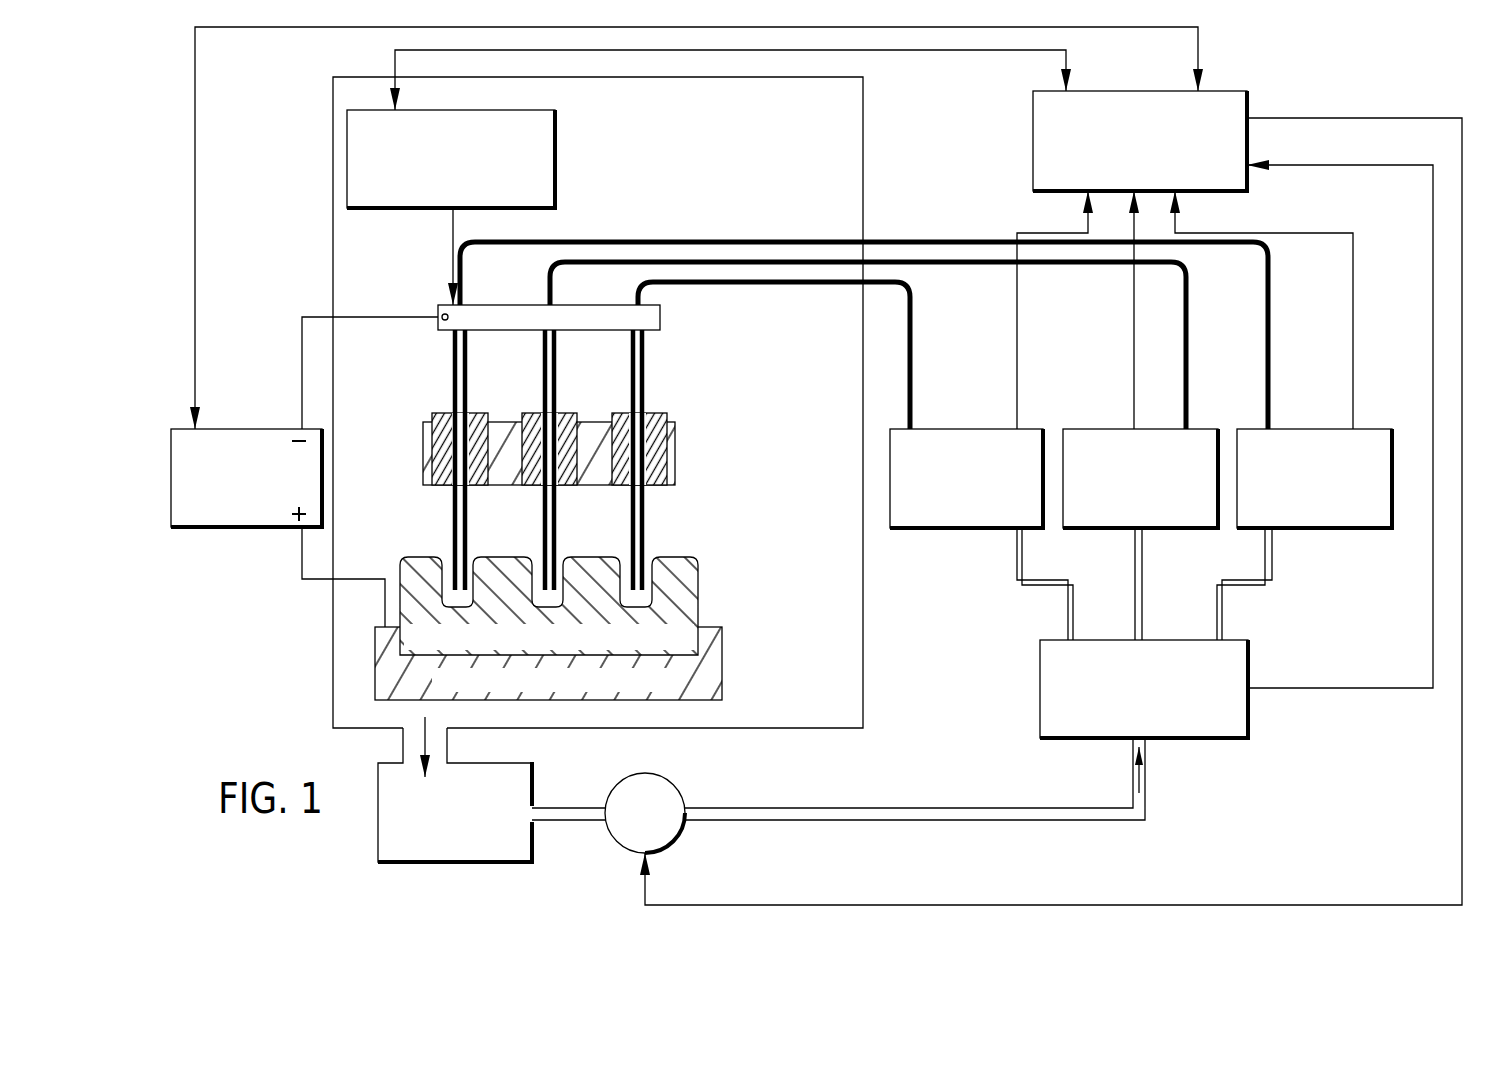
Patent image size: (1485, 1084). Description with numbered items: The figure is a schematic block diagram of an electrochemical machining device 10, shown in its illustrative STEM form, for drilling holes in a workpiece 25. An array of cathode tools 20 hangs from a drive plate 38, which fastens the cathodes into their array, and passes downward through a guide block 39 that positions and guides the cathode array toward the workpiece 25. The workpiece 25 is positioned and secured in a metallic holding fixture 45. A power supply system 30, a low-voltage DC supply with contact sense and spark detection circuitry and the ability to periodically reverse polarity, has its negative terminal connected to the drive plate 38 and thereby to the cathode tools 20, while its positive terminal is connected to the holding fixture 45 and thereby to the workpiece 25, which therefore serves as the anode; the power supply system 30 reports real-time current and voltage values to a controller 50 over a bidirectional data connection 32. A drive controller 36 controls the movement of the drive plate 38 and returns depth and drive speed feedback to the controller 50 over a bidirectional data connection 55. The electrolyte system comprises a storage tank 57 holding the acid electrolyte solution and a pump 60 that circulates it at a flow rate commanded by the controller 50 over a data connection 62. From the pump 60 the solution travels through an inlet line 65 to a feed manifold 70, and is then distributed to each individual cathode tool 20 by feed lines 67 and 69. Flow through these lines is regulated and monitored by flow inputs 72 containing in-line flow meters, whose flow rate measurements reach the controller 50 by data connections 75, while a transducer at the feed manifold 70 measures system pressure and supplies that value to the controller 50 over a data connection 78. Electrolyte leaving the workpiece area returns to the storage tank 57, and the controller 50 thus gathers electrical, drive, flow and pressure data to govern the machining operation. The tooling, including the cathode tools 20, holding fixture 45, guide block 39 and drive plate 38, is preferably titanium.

The electrochemical machining device 10 is at (283, 700).
The cathode tools 20 is at (452, 507).
The workpiece 25 is at (698, 575).
The power supply system 30 is at (207, 528).
The bidirectional data connection 32 is at (196, 232).
The drive controller 36 is at (555, 163).
The drive plate 38 is at (660, 305).
The guide block 39 is at (672, 422).
The holding fixture 45 is at (722, 672).
The controller 50 is at (1237, 91).
The bidirectional data connection 55 is at (1068, 52).
The storage tank 57 is at (534, 852).
The pump 60 is at (673, 843).
The data connection 62 is at (907, 904).
The inlet line 65 is at (872, 806).
The feed lines 67 is at (1240, 614).
The feed lines 69 is at (913, 385).
The feed manifold 70 is at (1250, 727).
The flow inputs 72 is at (930, 530).
The data connections 75 is at (1019, 310).
The data connection 78 is at (1360, 688).